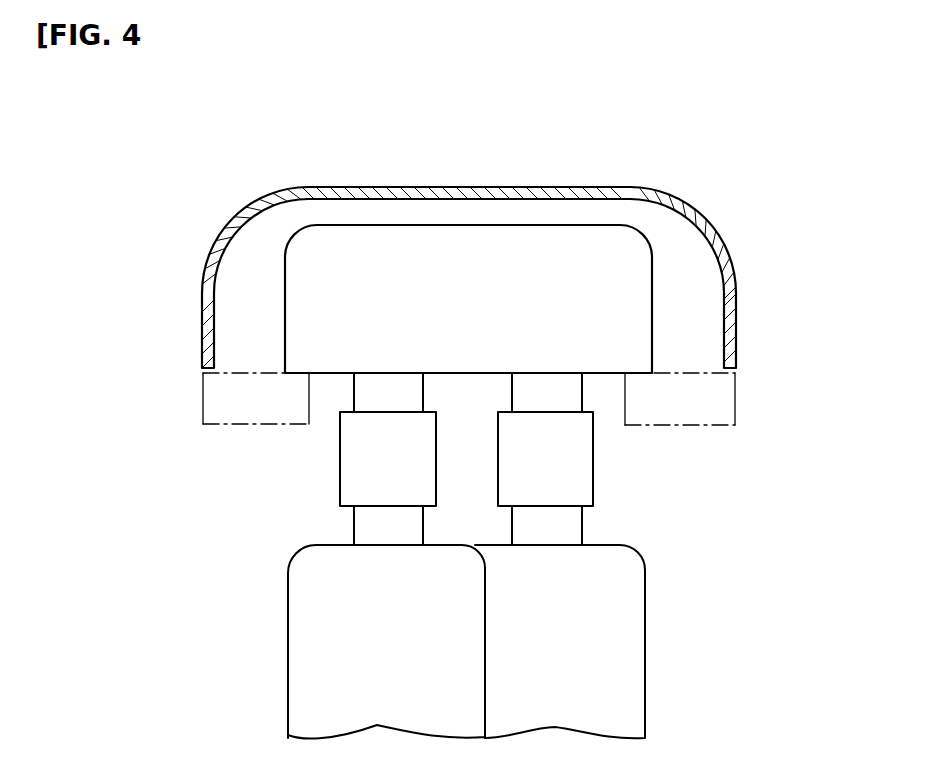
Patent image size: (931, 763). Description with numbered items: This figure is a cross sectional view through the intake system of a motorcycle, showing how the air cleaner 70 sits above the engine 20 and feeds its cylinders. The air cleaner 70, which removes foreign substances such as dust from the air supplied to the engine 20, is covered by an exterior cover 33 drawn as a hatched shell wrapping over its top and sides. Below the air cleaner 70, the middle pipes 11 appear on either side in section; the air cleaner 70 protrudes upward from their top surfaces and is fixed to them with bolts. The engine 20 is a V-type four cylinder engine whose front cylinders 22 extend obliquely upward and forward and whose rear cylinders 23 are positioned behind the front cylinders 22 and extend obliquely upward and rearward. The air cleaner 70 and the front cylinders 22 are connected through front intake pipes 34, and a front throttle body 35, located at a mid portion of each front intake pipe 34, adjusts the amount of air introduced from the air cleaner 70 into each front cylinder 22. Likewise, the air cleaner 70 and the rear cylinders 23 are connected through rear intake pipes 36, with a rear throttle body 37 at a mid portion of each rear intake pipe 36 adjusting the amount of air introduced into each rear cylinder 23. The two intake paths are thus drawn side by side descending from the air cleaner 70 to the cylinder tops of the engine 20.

The middle pipe 11 is at (201, 388).
The engine 20 is at (494, 642).
The front cylinder 22 is at (308, 646).
The rear cylinder 23 is at (646, 631).
The exterior cover 33 is at (500, 188).
The front intake pipe 34 is at (363, 526).
The front throttle body 35 is at (362, 466).
The rear intake pipe 36 is at (570, 532).
The rear throttle body 37 is at (577, 468).
The air cleaner 70 is at (400, 268).